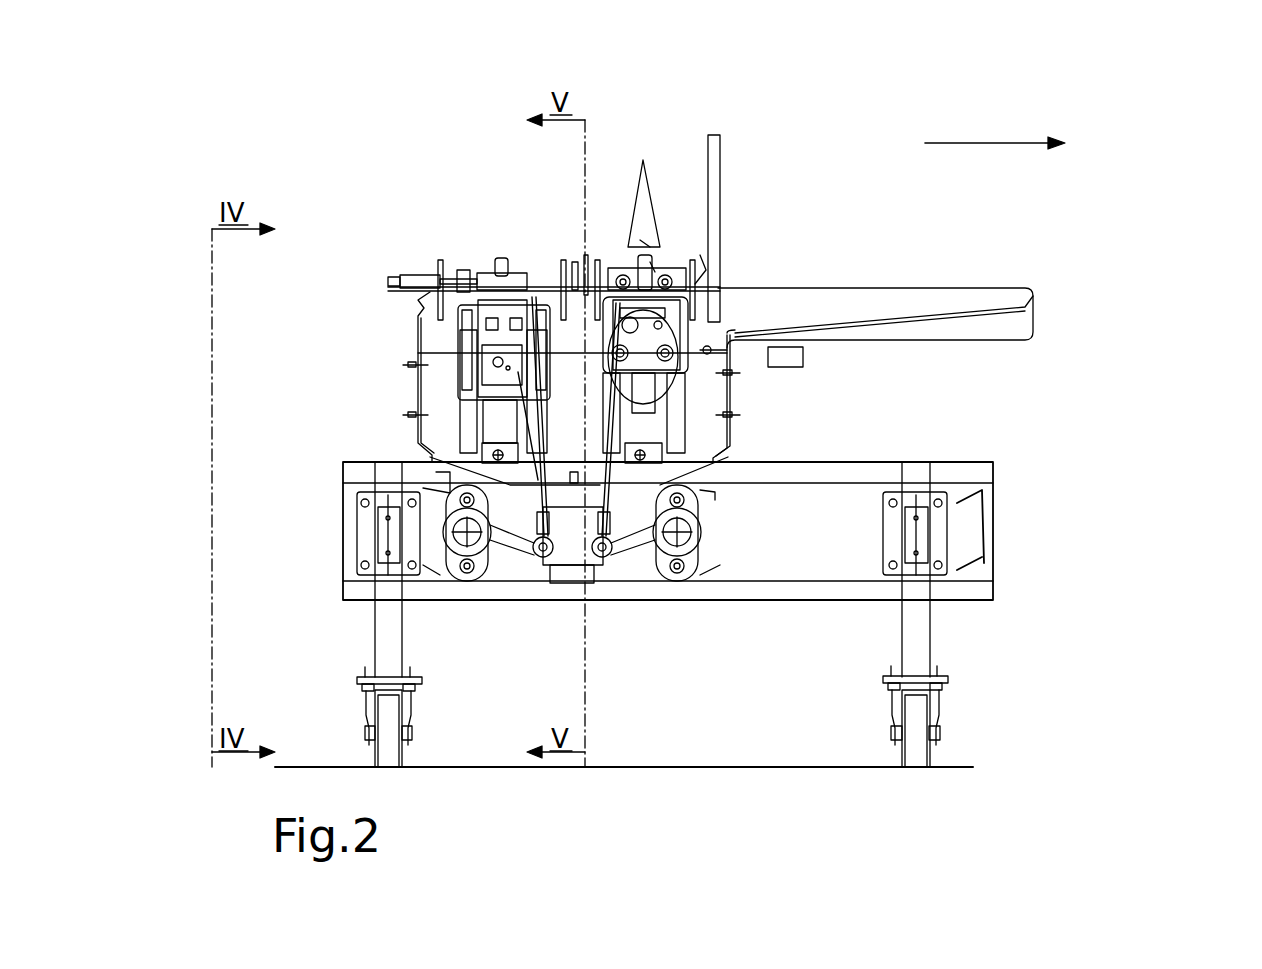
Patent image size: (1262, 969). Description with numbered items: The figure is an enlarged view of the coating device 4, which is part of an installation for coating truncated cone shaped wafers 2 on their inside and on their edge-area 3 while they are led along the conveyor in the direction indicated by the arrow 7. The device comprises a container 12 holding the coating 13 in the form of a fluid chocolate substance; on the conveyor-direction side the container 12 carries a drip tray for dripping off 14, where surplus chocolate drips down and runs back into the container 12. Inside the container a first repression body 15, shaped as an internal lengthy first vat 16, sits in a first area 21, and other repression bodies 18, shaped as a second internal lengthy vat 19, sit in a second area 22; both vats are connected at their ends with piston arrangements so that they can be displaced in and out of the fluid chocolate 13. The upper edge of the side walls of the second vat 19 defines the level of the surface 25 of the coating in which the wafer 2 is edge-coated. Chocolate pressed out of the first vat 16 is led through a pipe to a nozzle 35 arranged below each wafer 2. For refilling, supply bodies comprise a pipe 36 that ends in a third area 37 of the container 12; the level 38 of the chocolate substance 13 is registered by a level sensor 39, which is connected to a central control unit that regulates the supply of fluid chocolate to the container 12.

The wafer 2 is at (645, 180).
The edge-area 3 is at (645, 245).
The device 4 is at (1042, 380).
The arrow 7 is at (985, 143).
The container 12 is at (458, 250).
The coating 13 is at (735, 412).
The drip tray for dripping off 14 is at (922, 292).
The first repression body 15 is at (436, 352).
The first vat 16 is at (455, 370).
The other repression bodies 18 is at (710, 296).
The second vat 19 is at (692, 380).
The first area 21 is at (484, 250).
The second area 22 is at (605, 235).
The surface 25 is at (705, 250).
The nozzle 35 is at (655, 262).
The pipe 36 is at (712, 178).
The third area 37 is at (700, 436).
The level 38 is at (575, 262).
The level sensor 39 is at (795, 356).